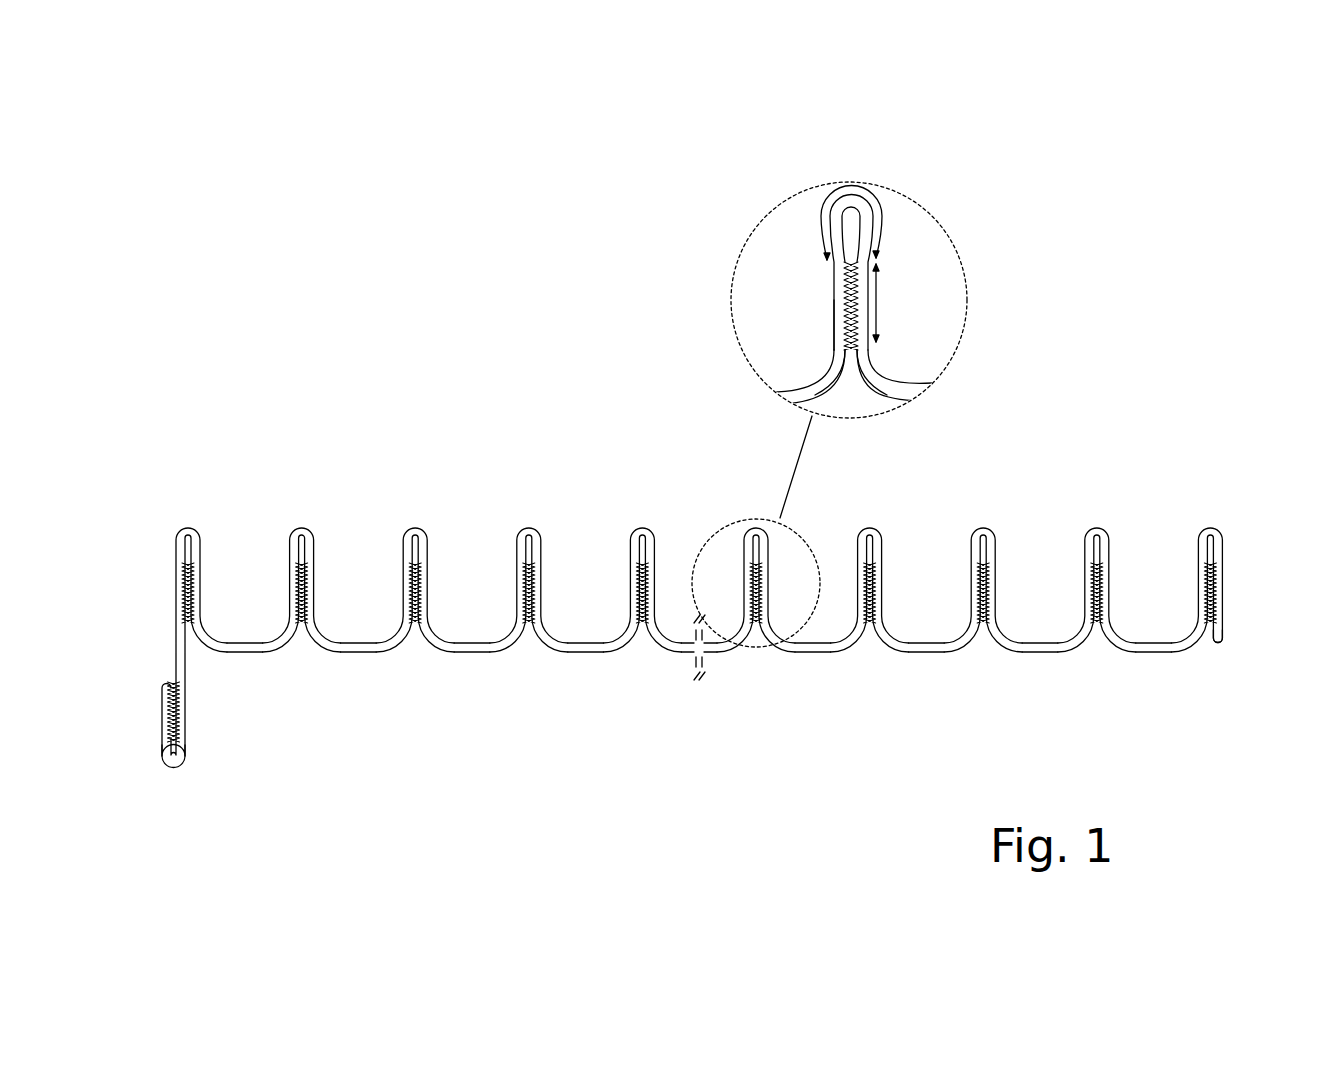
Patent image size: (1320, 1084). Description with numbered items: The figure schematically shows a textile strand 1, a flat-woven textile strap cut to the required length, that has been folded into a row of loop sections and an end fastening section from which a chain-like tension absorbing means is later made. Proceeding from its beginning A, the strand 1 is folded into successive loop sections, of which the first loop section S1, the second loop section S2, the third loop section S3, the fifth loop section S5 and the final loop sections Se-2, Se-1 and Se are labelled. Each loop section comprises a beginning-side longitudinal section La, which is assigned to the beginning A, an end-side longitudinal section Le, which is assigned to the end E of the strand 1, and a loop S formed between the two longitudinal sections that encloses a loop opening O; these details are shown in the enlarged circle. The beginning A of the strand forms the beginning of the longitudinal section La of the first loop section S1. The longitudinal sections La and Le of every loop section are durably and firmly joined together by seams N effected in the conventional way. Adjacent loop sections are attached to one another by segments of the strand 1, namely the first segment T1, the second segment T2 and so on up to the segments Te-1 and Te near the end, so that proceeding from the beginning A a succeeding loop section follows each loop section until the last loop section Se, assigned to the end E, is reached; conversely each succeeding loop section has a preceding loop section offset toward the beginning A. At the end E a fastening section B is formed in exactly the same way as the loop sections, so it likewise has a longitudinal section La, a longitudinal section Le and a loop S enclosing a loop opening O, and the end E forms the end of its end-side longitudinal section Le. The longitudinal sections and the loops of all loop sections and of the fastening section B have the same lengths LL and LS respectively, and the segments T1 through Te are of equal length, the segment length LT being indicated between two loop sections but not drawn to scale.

The strand 1 is at (323, 456).
The last loop section Se is at (202, 616).
The loop section preceding the last loop section Se-1 is at (290, 577).
The loop section Se-2 is at (403, 577).
The fifth loop section S5 is at (747, 565).
The third loop section S3 is at (972, 578).
The second loop section S2 is at (1087, 577).
The first loop section S1 is at (1199, 578).
The last segment Te is at (245, 652).
The segment Te-1 is at (357, 652).
The second segment T2 is at (1043, 652).
The first segment T1 is at (1153, 652).
The end of the strand E is at (177, 678).
The fastening section B is at (187, 723).
The beginning of the strand A is at (1219, 644).
The length of the segments LT is at (870, 663).
The loop S is at (862, 203).
The loop opening O is at (850, 224).
The length of the loop LS is at (878, 229).
The length of the longitudinal sections LL is at (878, 293).
The beginning-side longitudinal section La is at (862, 313).
The end-side longitudinal section Le is at (840, 323).
The seam N is at (847, 351).